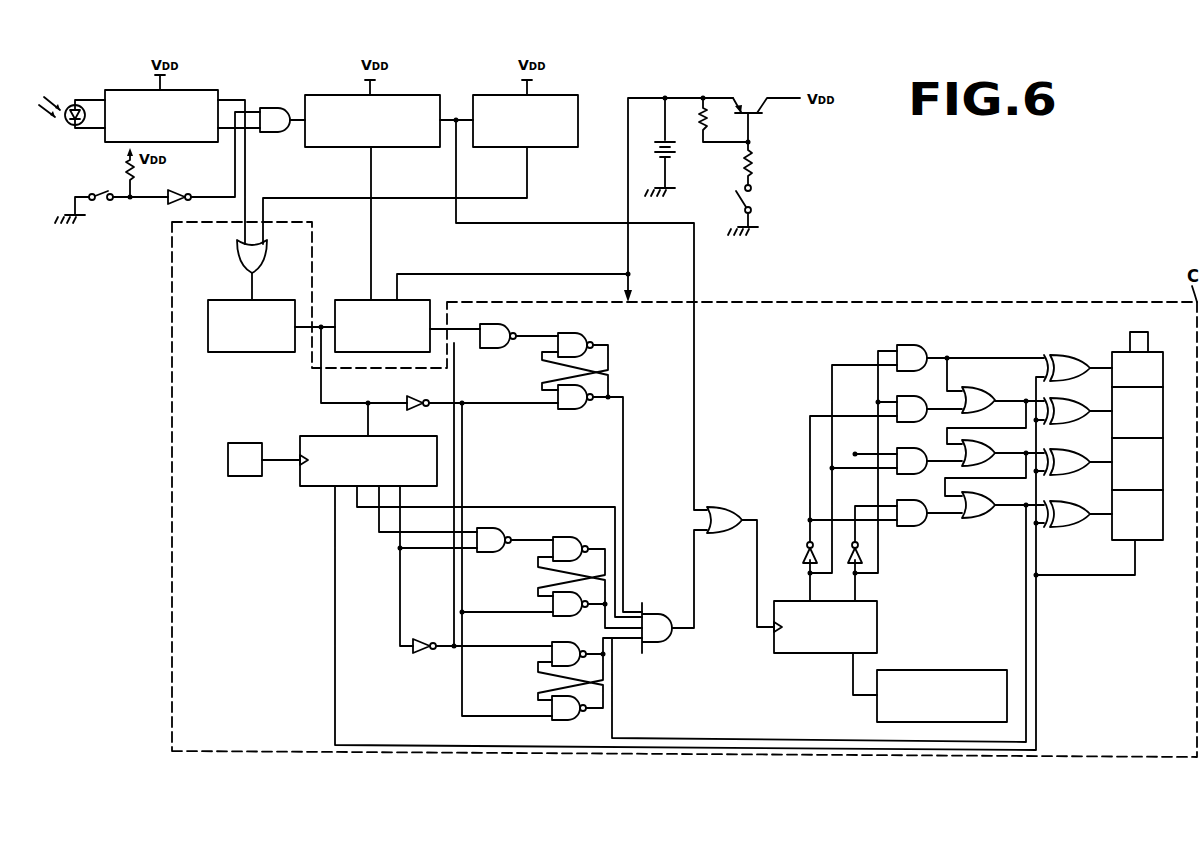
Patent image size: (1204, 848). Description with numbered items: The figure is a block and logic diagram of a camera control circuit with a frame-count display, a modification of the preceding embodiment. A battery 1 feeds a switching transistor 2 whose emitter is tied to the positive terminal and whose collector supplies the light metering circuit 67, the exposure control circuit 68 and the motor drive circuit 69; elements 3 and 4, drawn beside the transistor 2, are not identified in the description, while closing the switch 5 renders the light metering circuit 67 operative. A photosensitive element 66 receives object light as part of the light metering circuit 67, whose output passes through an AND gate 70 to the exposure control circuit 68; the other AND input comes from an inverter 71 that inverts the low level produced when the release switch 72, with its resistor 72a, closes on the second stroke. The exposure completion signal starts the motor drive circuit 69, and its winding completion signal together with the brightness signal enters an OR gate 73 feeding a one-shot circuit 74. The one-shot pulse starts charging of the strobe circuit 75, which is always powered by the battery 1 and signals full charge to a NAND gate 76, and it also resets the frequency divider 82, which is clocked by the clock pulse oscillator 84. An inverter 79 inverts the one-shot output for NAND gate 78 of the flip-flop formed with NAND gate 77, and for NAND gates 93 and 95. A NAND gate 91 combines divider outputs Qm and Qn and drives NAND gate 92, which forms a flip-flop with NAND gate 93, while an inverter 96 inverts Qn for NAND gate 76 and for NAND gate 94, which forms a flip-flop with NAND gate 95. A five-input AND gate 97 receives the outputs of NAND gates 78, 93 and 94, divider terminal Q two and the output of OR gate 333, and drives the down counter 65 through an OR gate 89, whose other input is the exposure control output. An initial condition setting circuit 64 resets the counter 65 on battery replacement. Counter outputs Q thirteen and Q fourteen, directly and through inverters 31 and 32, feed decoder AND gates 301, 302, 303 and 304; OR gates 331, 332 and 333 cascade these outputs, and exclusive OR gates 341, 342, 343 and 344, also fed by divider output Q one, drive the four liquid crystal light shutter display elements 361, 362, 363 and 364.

The battery 1 is at (655, 148).
The switching transistor 2 is at (753, 98).
The resistor 3 is at (701, 130).
The resistor 4 is at (757, 158).
The switch 5 is at (752, 197).
The inverter 31 is at (803, 557).
The inverter 32 is at (851, 564).
The initial condition setting circuit 64 is at (988, 670).
The down counter 65 is at (877, 617).
The photosensitive element 66 is at (68, 127).
The light metering circuit 67 is at (213, 90).
The exposure control circuit 68 is at (421, 95).
The motor drive circuit 69 is at (563, 95).
The AND gate 70 is at (275, 108).
The inverter 71 is at (167, 204).
The switch 72 is at (101, 193).
The resistor 72a is at (140, 178).
The OR gate 73 is at (268, 246).
The one-shot circuit 74 is at (291, 300).
The strobe circuit 75 is at (423, 300).
The NAND gate 76 is at (497, 361).
The NAND gate 77 is at (580, 332).
The NAND gate 78 is at (574, 410).
The inverter 79 is at (407, 398).
The frequency divider 82 is at (431, 436).
The clock pulse oscillator 84 is at (252, 443).
The OR gate 89 is at (728, 507).
The NAND gate 91 is at (493, 553).
The NAND gate 92 is at (573, 537).
The NAND gate 93 is at (570, 617).
The NAND gate 94 is at (563, 642).
The NAND gate 95 is at (570, 721).
The inverter 96 is at (423, 654).
The AND gate 97 is at (660, 614).
The AND gate 301 is at (933, 337).
The AND gate 302 is at (906, 397).
The AND gate 303 is at (907, 449).
The AND gate 304 is at (913, 527).
The OR gate 331 is at (978, 389).
The OR gate 332 is at (988, 442).
The OR gate 333 is at (980, 518).
The exclusive OR gate 341 is at (1068, 356).
The exclusive OR gate 342 is at (1075, 398).
The exclusive OR gate 343 is at (1070, 450).
The exclusive OR gate 344 is at (1070, 528).
The liquid crystal light shutter display element 361 is at (1163, 370).
The liquid crystal light shutter display element 362 is at (1163, 407).
The liquid crystal light shutter display element 363 is at (1163, 460).
The liquid crystal light shutter display element 364 is at (1163, 512).